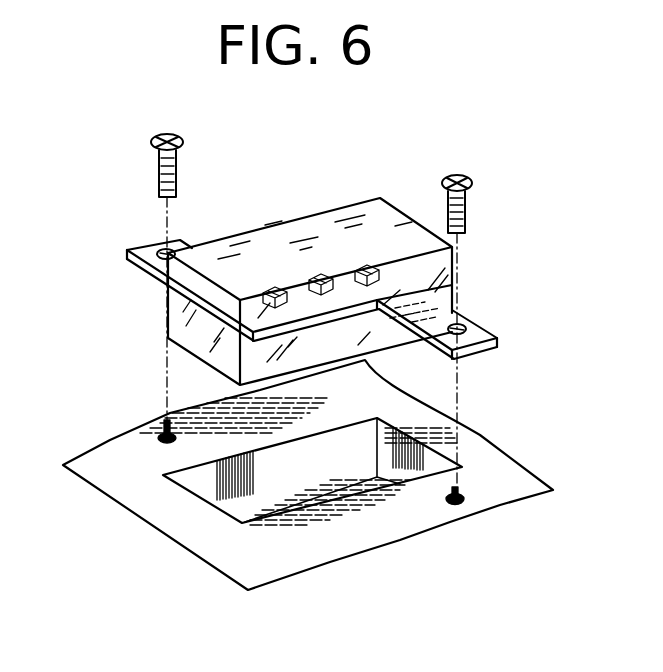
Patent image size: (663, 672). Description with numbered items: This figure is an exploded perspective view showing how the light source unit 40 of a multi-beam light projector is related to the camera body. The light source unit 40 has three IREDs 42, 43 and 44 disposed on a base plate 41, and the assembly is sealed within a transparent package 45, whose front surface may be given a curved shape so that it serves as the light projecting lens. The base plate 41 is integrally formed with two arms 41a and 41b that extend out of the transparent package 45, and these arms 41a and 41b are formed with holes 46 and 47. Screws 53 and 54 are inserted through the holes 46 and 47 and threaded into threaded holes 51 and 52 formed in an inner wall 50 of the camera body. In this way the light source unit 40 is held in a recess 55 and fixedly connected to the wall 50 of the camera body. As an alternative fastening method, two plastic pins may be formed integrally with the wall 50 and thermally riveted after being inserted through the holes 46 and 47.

The light source unit 40 is at (418, 200).
The base plate 41 is at (324, 265).
The arm 41a is at (493, 334).
The arm 41b is at (137, 250).
The IRED 42 is at (277, 285).
The IRED 43 is at (318, 275).
The IRED 44 is at (363, 265).
The transparent package 45 is at (397, 207).
The hole 46 is at (466, 325).
The hole 47 is at (163, 250).
The inner wall 50 is at (392, 533).
The threaded hole 51 is at (465, 502).
The threaded hole 52 is at (160, 430).
The screw 53 is at (472, 185).
The screw 54 is at (182, 136).
The recess 55 is at (193, 495).